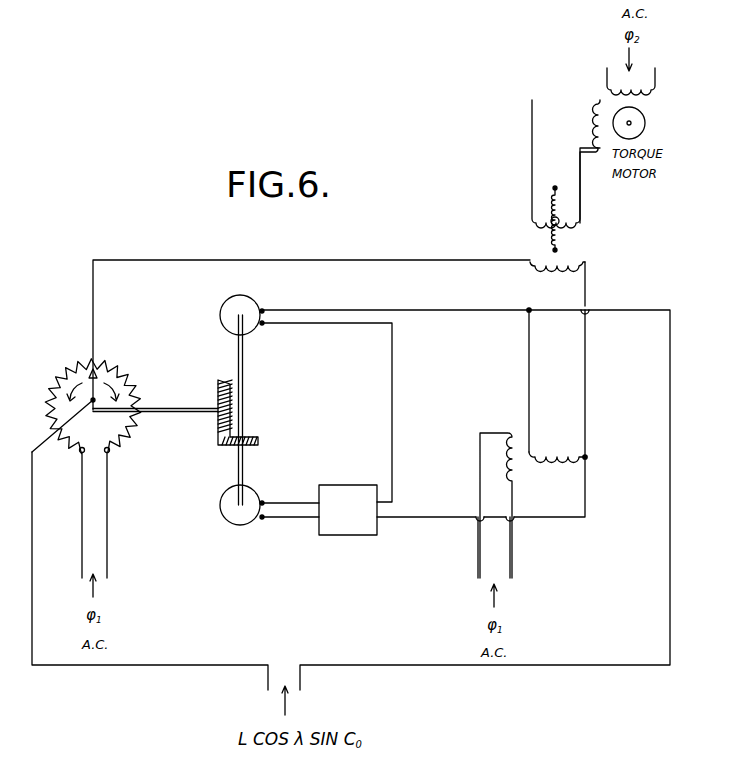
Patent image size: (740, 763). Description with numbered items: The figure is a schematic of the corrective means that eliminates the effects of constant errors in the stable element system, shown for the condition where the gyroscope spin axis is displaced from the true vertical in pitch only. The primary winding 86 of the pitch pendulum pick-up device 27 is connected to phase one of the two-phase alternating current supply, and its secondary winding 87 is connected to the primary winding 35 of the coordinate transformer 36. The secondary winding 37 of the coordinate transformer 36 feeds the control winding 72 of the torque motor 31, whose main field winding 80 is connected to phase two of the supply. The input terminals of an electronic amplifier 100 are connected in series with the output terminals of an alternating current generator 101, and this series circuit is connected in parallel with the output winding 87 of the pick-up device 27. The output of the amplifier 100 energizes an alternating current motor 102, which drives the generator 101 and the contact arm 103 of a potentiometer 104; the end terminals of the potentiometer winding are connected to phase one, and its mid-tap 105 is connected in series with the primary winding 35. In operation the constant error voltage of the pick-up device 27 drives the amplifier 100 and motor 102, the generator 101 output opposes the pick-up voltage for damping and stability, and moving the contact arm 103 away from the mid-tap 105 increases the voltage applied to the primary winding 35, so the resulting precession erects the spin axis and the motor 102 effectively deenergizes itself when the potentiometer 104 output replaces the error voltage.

The pitch pendulum pick-up device 27 is at (532, 486).
The torque motor 31 is at (656, 131).
The primary winding 35 is at (557, 268).
The coordinate transformer 36 is at (573, 228).
The secondary winding 37 is at (549, 226).
The control winding 72 is at (592, 120).
The main field winding 80 is at (651, 94).
The primary winding 86 is at (516, 470).
The secondary winding 87 is at (544, 455).
The electronic amplifier 100 is at (345, 485).
The alternating current generator 101 is at (254, 305).
The alternating current motor 102 is at (228, 517).
The contact arm 103 is at (72, 390).
The potentiometer 104 is at (144, 446).
The mid-tap 105 is at (95, 366).